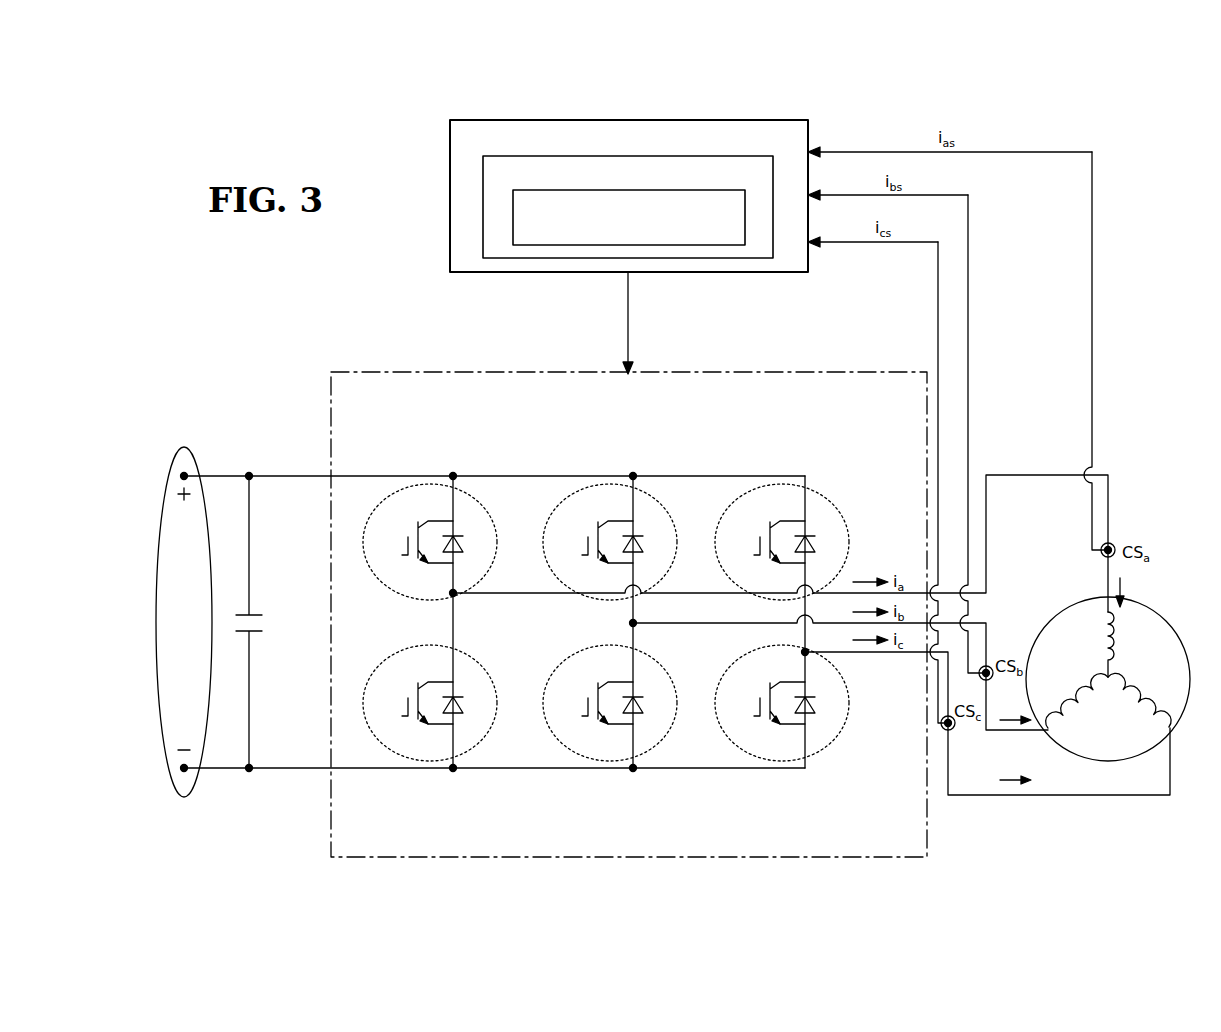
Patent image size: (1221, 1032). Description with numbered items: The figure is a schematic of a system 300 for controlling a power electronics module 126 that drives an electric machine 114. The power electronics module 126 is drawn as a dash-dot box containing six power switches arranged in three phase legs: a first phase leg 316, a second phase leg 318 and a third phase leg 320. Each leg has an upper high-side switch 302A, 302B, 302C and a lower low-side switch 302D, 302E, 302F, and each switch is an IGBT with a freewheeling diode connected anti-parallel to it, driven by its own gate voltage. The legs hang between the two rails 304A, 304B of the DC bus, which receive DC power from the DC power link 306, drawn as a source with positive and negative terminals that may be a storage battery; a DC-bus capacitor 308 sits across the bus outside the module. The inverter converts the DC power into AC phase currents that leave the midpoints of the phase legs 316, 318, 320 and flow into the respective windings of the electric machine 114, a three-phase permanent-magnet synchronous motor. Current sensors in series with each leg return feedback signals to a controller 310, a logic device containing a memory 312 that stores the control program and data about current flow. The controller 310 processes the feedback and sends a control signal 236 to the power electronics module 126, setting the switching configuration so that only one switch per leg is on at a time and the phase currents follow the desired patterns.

The system 300 is at (892, 110).
The controller 310 is at (628, 120).
The memory 312 is at (764, 156).
The control signal 236 is at (618, 318).
The power electronics module 126 is at (497, 372).
The DC power link 306 is at (184, 447).
The DC bus rail 304A is at (302, 466).
The DC bus rail 304B is at (302, 780).
The DC-bus capacitor 308 is at (263, 632).
The high-side switch 302A is at (421, 485).
The high-side switch 302B is at (600, 485).
The high-side switch 302C is at (775, 485).
The low-side switch 302D is at (425, 762).
The low-side switch 302E is at (605, 762).
The low-side switch 302F is at (775, 762).
The first phase leg 316 is at (453, 593).
The second phase leg 318 is at (633, 623).
The third phase leg 320 is at (805, 652).
The electric machine 114 is at (1168, 615).